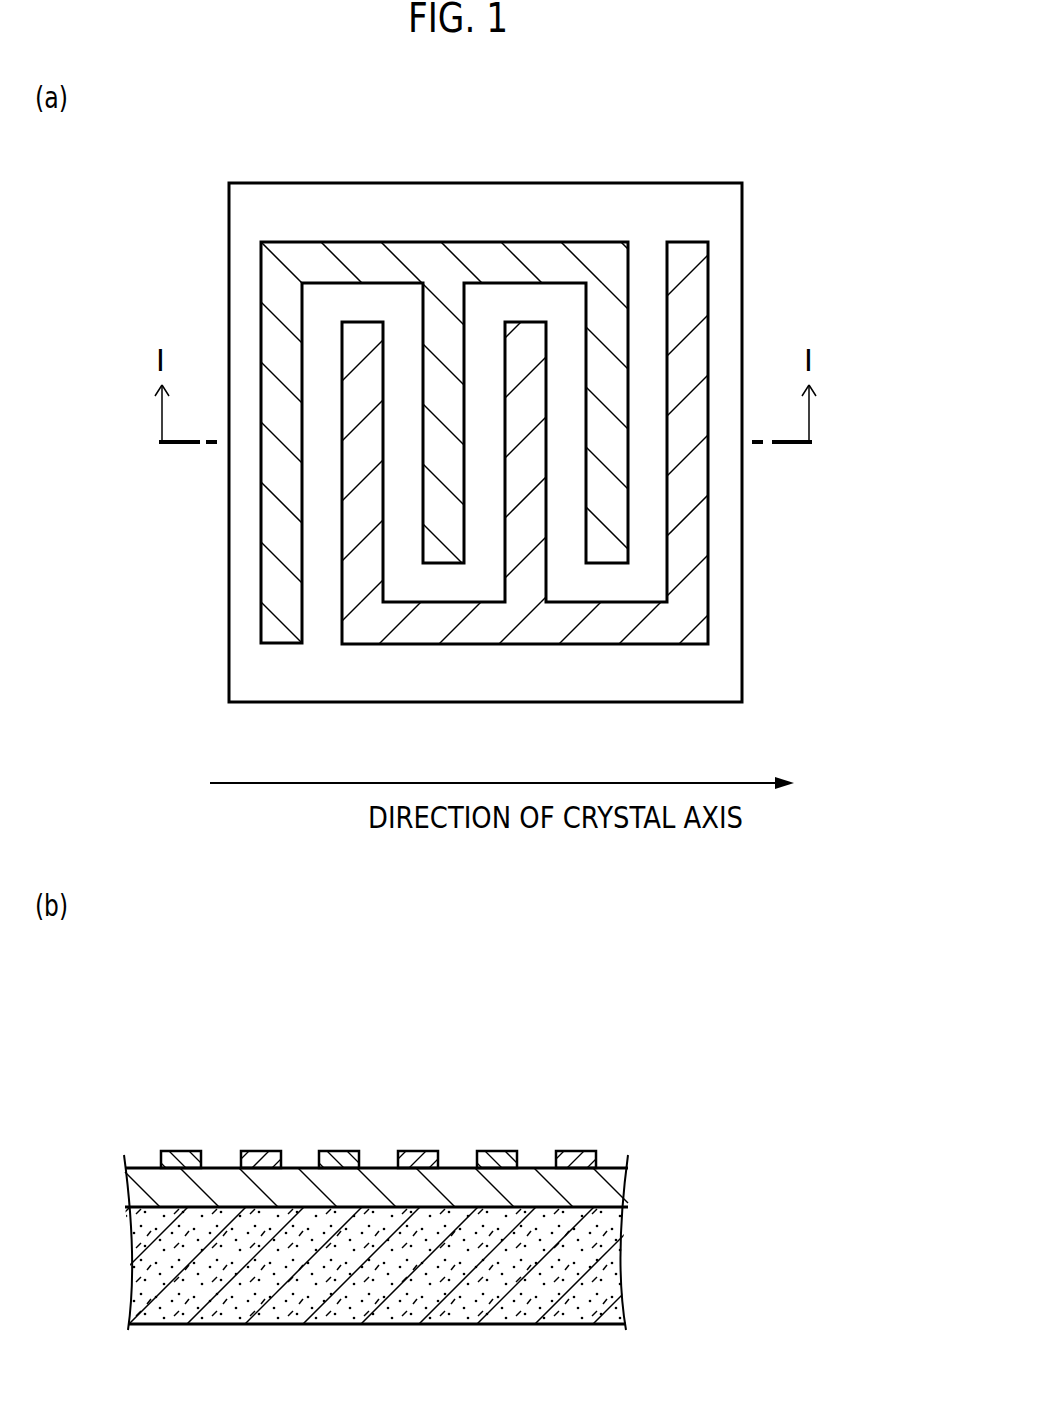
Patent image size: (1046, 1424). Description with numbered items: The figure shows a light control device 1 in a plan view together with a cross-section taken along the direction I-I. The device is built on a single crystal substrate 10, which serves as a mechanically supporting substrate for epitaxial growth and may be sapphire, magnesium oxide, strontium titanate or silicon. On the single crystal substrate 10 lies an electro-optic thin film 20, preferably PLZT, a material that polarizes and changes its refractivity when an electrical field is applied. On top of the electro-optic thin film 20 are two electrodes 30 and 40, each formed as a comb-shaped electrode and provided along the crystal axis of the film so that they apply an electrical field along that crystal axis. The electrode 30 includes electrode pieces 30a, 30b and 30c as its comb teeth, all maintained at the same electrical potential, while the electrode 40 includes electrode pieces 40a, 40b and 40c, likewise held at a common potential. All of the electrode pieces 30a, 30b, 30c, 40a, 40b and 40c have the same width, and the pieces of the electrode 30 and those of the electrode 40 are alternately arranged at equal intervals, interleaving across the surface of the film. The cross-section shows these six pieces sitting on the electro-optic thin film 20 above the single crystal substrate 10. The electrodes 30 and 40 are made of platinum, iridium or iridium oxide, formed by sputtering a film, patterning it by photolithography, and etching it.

The light control device 1 is at (780, 114).
The single crystal substrate 10 is at (597, 1272).
The electro-optic thin film 20 is at (728, 212).
The electrode 30 is at (335, 260).
The electrode piece 30a is at (290, 627).
The electrode piece 30b is at (447, 557).
The electrode piece 30c is at (602, 543).
The electrode 40 is at (590, 632).
The electrode piece 40a is at (362, 333).
The electrode piece 40b is at (535, 333).
The electrode piece 40c is at (697, 254).